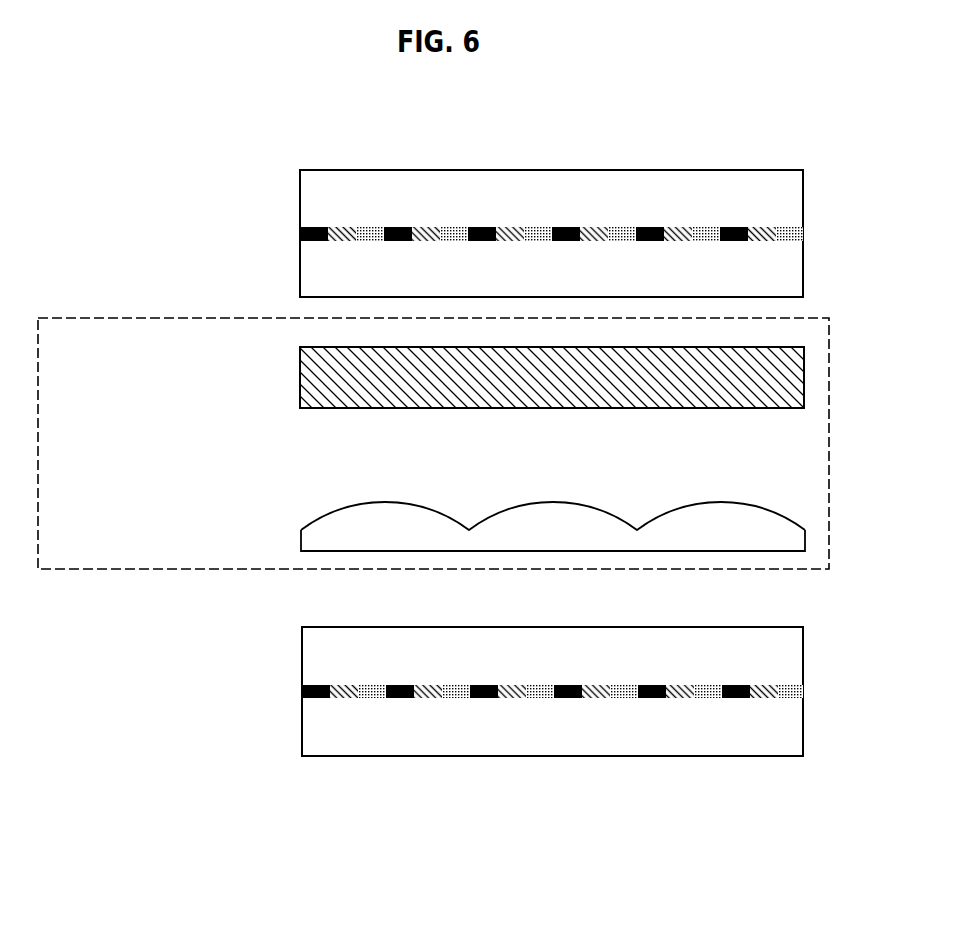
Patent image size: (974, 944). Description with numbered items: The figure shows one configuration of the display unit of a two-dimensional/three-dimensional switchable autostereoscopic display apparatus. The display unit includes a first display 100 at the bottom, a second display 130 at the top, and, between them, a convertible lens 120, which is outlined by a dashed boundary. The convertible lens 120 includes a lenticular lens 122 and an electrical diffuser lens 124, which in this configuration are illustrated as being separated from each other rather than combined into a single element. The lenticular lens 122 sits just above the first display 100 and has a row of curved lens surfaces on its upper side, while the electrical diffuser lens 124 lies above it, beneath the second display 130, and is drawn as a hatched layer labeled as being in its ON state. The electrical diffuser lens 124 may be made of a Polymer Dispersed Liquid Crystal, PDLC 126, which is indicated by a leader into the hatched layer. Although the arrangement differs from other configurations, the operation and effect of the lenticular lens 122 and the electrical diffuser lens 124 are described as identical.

The first display 100 is at (485, 691).
The second display 130 is at (483, 233).
The convertible lens 120 is at (829, 444).
The lenticular lens 122 is at (325, 533).
The electrical diffuser lens 124 is at (293, 408).
The PDLC 126 is at (582, 388).